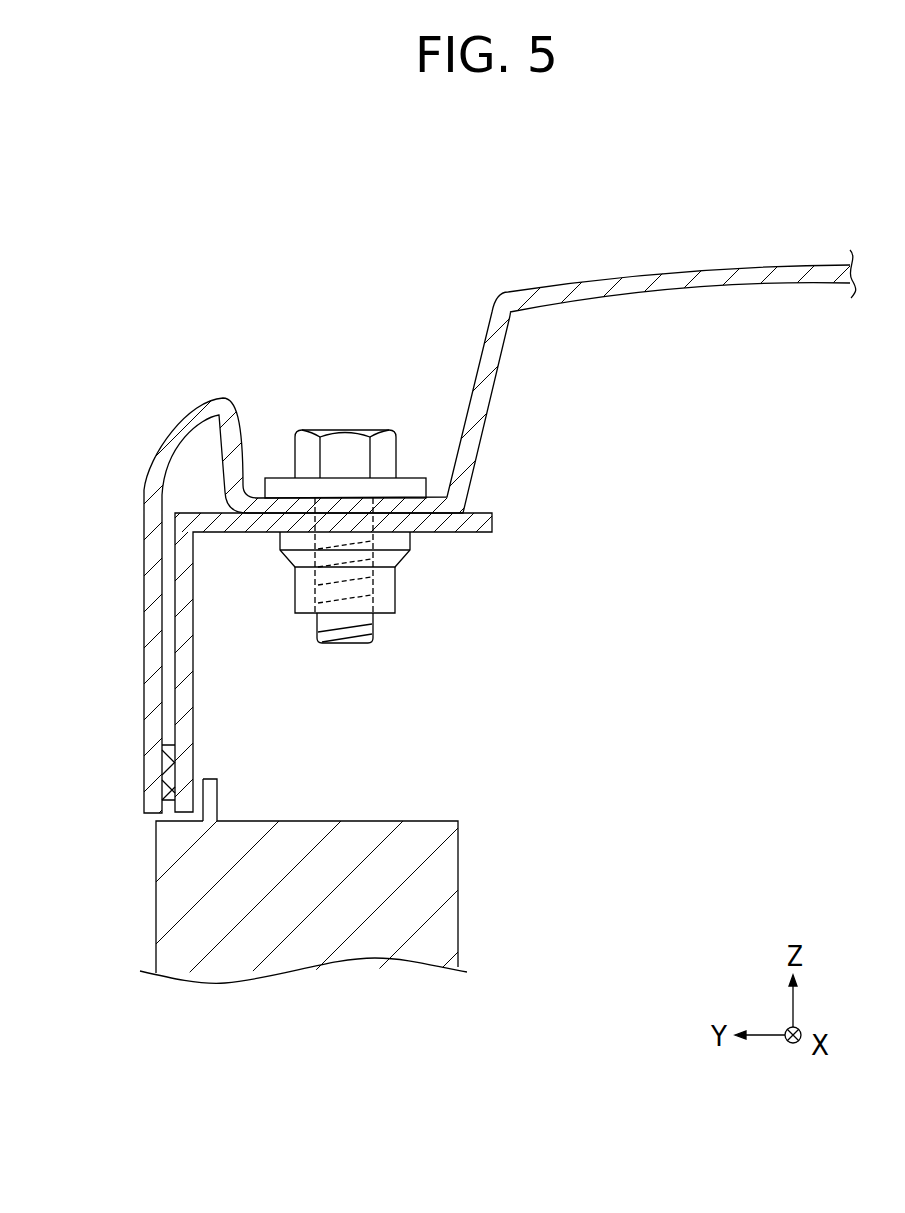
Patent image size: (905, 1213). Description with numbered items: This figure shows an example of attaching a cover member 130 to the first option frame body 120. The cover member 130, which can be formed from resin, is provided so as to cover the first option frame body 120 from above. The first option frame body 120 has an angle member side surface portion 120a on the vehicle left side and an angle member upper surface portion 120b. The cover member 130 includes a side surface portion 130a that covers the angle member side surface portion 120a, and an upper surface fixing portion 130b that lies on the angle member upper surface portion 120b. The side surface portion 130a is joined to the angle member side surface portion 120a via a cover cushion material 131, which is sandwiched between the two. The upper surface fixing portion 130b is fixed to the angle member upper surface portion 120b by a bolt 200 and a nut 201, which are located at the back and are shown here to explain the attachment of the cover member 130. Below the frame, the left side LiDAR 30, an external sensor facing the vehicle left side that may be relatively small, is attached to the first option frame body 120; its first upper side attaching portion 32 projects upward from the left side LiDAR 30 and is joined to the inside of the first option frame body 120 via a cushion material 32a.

The cover member 130 is at (737, 228).
The side surface portion 130a is at (145, 657).
The upper surface fixing portion 130b is at (440, 508).
The cover cushion material 131 is at (168, 763).
The first option frame body 120 is at (492, 510).
The angle member side surface portion 120a is at (195, 672).
The angle member upper surface portion 120b is at (473, 523).
The bolt 200 is at (348, 438).
The nut 201 is at (385, 602).
The left side LiDAR 30 is at (447, 872).
The first upper side attaching portion 32 is at (218, 798).
The cushion material 32a is at (195, 785).